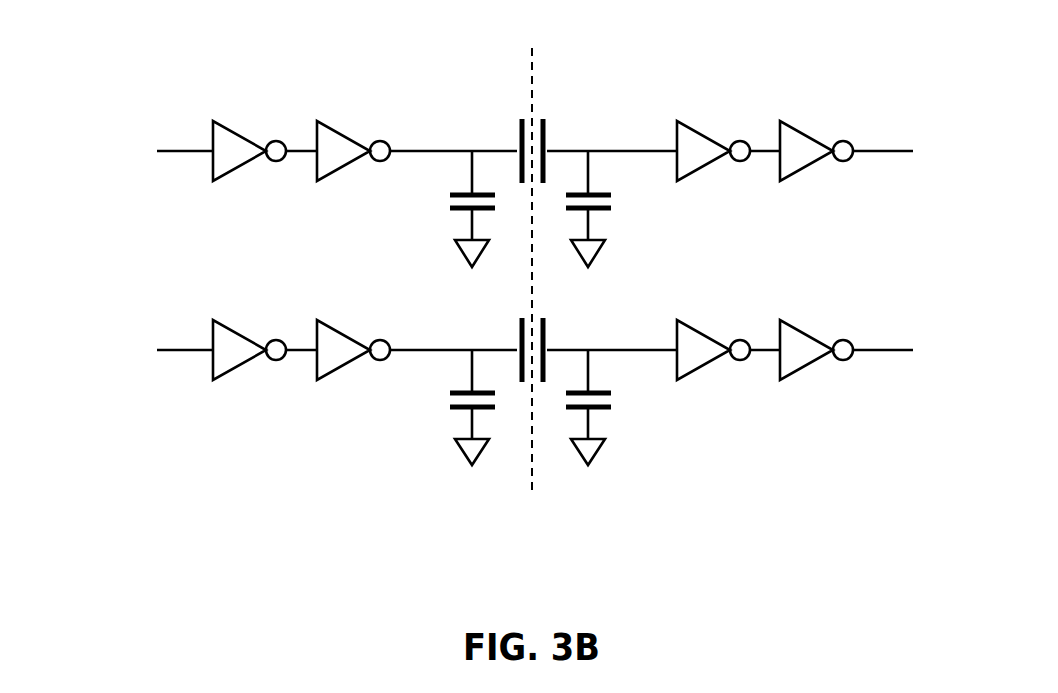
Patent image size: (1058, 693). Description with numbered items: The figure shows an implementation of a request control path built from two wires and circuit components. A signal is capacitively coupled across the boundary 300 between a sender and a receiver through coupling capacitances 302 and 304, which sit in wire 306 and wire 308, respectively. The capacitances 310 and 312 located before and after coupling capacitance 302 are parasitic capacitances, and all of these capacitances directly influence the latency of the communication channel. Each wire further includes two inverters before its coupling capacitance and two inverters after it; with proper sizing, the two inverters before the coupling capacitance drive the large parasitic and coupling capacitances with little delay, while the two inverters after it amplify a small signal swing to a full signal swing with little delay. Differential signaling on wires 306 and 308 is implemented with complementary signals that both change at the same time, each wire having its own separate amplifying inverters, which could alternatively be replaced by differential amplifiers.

The boundary 300 is at (532, 457).
The coupling capacitance 302 is at (597, 62).
The coupling capacitance 304 is at (546, 333).
The wire 306 is at (155, 152).
The wire 308 is at (155, 350).
The parasitic capacitance 310 is at (450, 195).
The parasitic capacitance 312 is at (611, 195).